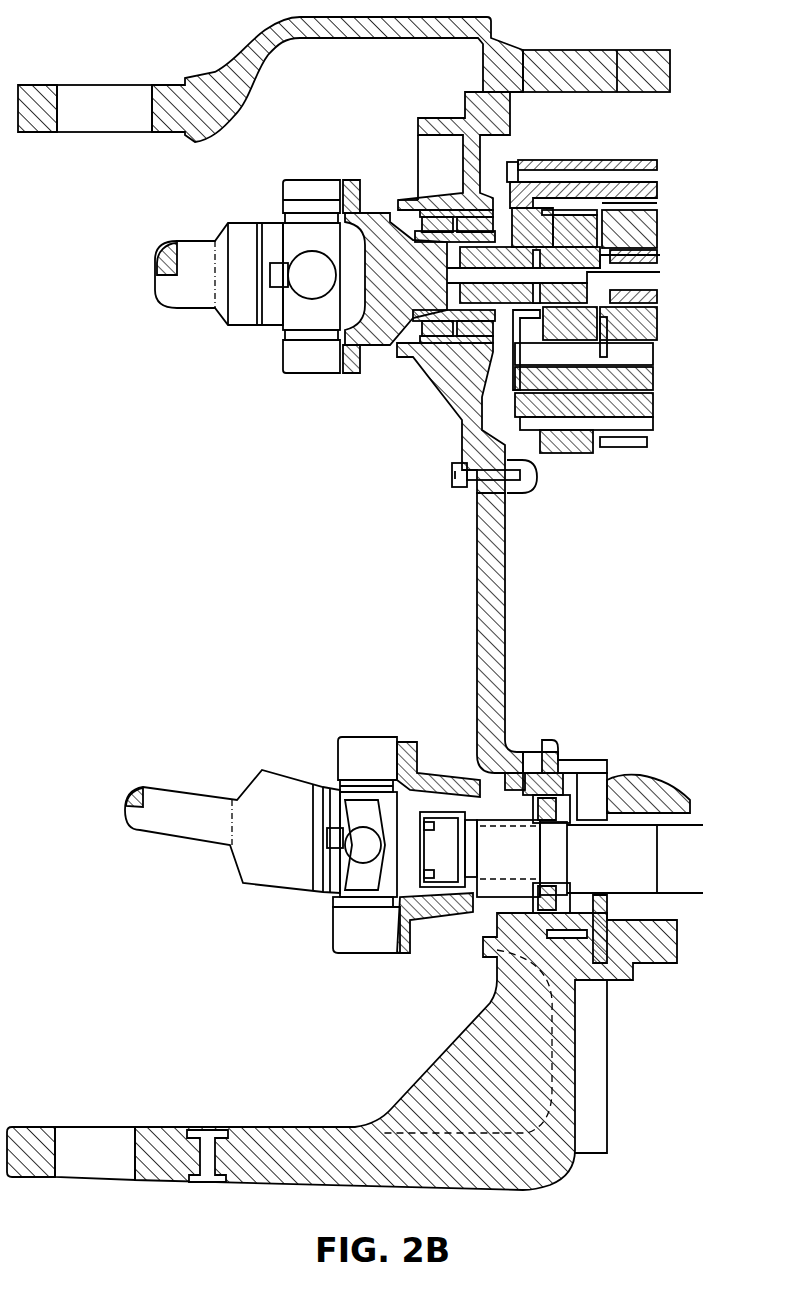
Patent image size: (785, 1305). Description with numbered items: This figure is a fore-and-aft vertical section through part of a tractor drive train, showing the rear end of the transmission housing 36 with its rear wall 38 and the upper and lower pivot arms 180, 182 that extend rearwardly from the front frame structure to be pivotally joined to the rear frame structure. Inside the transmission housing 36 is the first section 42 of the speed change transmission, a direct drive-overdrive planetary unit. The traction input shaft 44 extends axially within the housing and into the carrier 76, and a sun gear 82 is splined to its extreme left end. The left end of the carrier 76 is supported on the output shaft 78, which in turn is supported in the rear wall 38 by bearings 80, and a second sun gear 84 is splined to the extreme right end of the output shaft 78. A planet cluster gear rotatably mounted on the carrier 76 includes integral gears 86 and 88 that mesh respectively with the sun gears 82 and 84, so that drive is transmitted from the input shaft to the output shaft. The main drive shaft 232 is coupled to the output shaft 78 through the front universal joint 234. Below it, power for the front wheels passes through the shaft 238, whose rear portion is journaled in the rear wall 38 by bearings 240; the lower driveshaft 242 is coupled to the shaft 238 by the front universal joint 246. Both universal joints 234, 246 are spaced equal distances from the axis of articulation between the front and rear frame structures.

The transmission housing 36 is at (632, 56).
The rear wall 38 is at (478, 560).
The first section of speed change transmission 42 is at (611, 471).
The traction input shaft 44 is at (652, 262).
The carrier 76 is at (648, 191).
The output shaft 78 is at (389, 237).
The bearings 80 is at (426, 224).
The sun gear 82 is at (650, 238).
The sun gear 84 is at (568, 224).
The gear of planet cluster gear 86 is at (632, 448).
The gear of planet cluster gear 88 is at (565, 452).
The upper pivot arm 180 is at (33, 88).
The lower pivot arm 182 is at (28, 1130).
The main drive shaft 232 is at (186, 248).
The front universal joint 234 is at (320, 188).
The shaft 238 is at (655, 856).
The bearings 240 is at (570, 806).
The lower driveshaft 242 is at (178, 835).
The front universal joint 246 is at (368, 745).